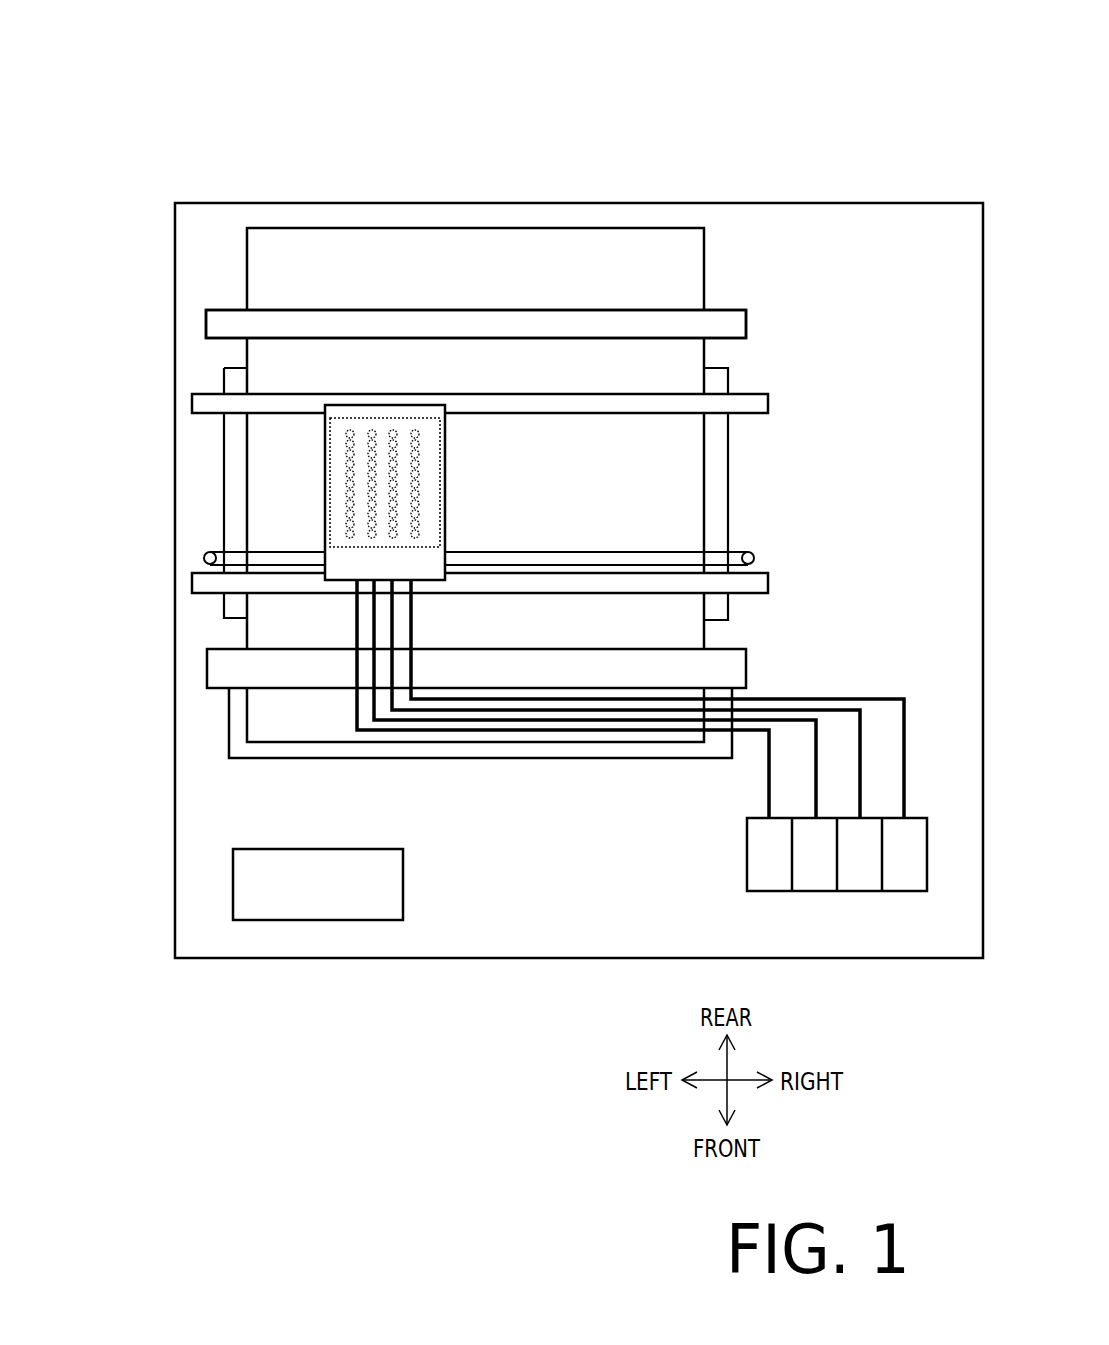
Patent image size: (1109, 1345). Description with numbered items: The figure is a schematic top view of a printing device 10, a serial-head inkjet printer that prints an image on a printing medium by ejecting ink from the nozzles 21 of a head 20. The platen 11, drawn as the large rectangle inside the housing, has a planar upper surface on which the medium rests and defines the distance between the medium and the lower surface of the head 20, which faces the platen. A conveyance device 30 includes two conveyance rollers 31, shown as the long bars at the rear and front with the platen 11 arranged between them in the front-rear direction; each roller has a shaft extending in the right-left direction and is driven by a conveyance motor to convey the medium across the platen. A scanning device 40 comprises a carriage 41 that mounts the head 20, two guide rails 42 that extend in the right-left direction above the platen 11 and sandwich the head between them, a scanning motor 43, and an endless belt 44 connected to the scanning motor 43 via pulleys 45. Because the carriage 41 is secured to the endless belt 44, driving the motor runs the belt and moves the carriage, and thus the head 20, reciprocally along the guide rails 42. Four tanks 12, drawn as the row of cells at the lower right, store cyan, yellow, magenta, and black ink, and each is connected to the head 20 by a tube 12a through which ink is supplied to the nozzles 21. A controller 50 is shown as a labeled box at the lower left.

The printing device 10 is at (583, 110).
The platen 11 is at (233, 385).
The tank 12 is at (904, 868).
The tube 12a is at (816, 692).
The head 20 is at (430, 421).
The nozzle 21 is at (349, 416).
The conveyance device 30 is at (476, 324).
The conveyance roller 31 is at (230, 318).
The scanning device 40 is at (535, 390).
The carriage 41 is at (326, 403).
The guide rail 42 is at (207, 582).
The scanning motor 43 is at (752, 556).
The endless belt 44 is at (752, 552).
The pulley 45 is at (755, 560).
The controller 50 is at (365, 849).